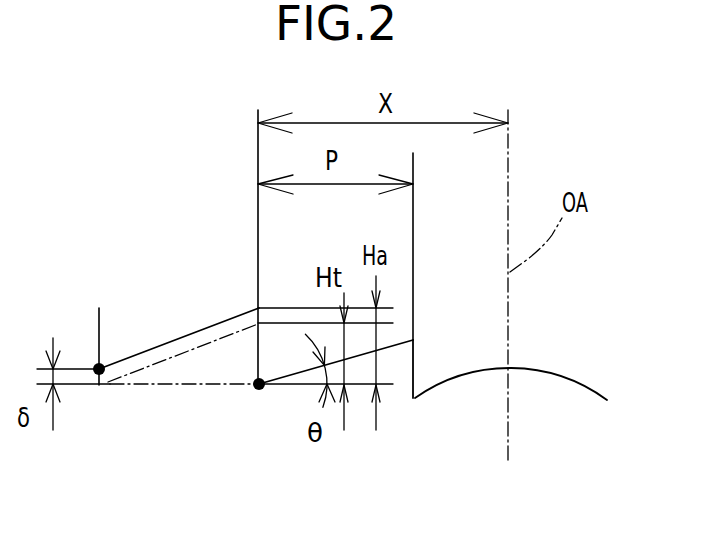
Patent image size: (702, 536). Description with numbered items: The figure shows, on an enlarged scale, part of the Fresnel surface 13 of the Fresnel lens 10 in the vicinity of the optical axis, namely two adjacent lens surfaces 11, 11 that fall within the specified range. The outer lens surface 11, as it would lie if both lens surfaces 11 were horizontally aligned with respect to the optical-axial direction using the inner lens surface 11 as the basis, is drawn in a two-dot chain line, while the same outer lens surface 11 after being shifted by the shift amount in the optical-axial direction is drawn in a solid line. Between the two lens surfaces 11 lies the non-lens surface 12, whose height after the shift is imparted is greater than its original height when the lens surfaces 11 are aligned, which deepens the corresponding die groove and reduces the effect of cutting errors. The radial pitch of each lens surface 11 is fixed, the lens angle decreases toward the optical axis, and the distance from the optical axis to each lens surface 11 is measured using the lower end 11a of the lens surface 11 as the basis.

The Fresnel lens 10 is at (98, 93).
The lens surface 11 is at (163, 342).
The lower end of the lens surface 11a is at (99, 369).
The non-lens surface 12 is at (415, 370).
The Fresnel surface 13 is at (220, 288).